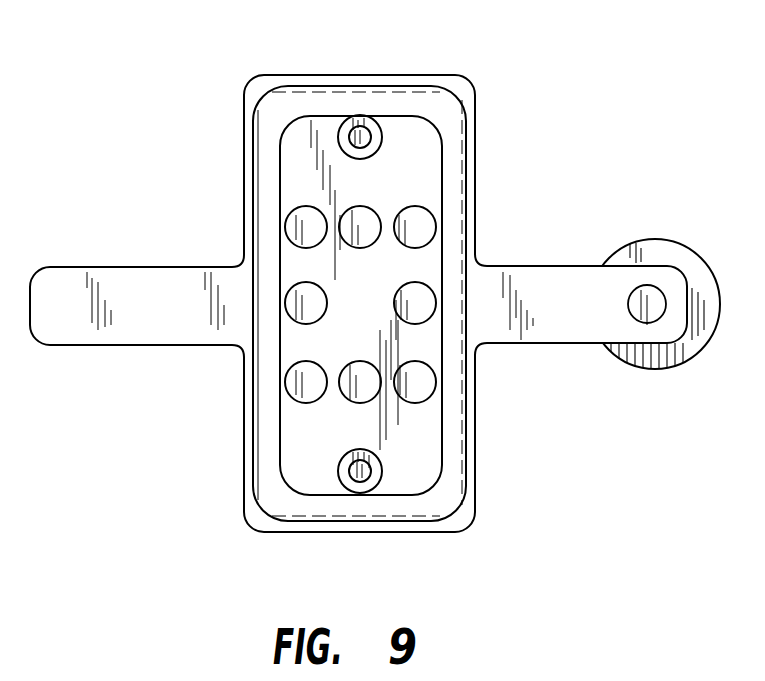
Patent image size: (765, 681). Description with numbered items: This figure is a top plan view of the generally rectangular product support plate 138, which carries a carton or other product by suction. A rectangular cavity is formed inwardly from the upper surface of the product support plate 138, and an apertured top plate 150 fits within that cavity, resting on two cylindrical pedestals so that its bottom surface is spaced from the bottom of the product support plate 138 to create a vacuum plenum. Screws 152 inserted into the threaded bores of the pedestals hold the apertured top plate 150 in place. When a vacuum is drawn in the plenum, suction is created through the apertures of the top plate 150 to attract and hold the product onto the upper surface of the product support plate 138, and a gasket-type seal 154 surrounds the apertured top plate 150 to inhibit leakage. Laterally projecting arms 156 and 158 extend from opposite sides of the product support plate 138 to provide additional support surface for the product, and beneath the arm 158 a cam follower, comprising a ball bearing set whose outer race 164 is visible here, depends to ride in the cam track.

The product support plate 138 is at (475, 95).
The apertured top plate 150 is at (423, 163).
The screws 152 is at (363, 130).
The gasket-type seal 154 is at (265, 428).
The laterally projecting arm 156 is at (177, 266).
The laterally projecting arm 158 is at (525, 266).
The outer race 164 is at (650, 237).